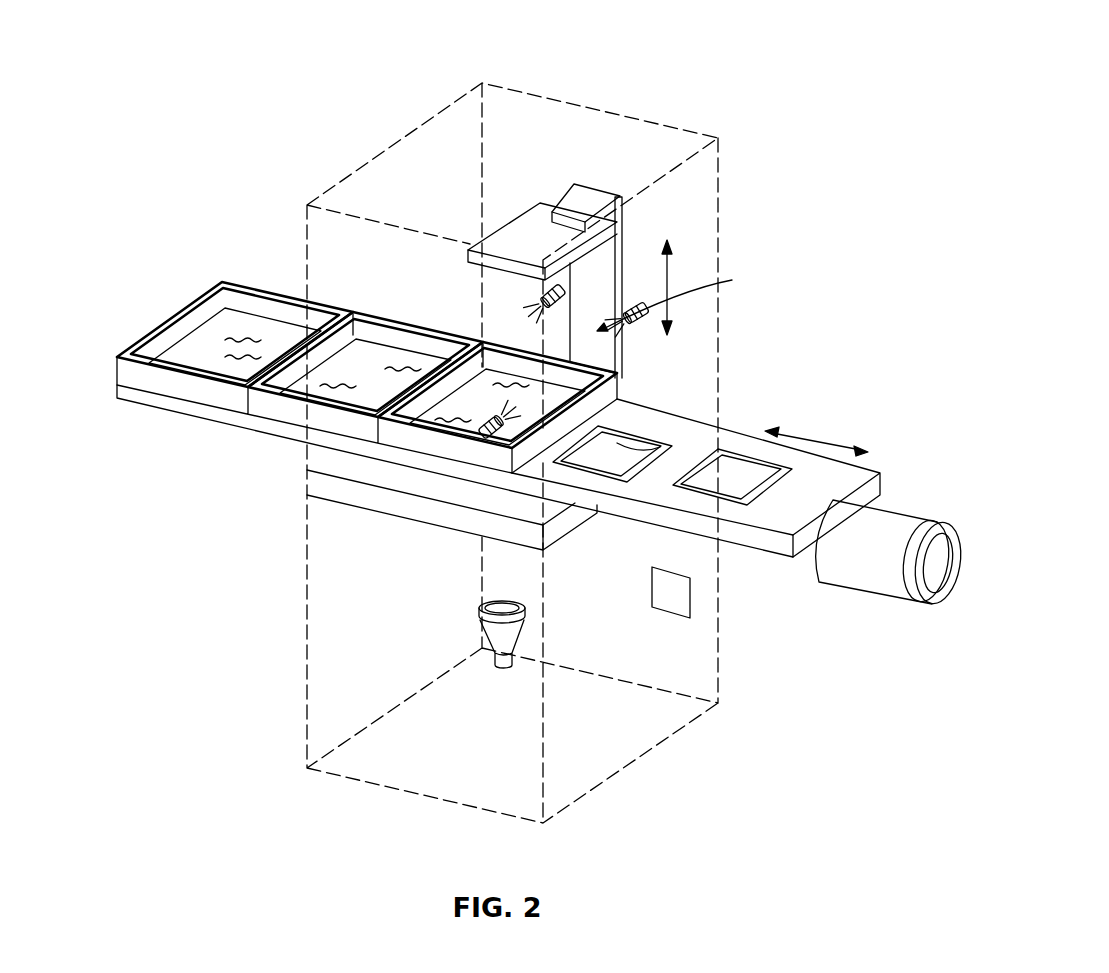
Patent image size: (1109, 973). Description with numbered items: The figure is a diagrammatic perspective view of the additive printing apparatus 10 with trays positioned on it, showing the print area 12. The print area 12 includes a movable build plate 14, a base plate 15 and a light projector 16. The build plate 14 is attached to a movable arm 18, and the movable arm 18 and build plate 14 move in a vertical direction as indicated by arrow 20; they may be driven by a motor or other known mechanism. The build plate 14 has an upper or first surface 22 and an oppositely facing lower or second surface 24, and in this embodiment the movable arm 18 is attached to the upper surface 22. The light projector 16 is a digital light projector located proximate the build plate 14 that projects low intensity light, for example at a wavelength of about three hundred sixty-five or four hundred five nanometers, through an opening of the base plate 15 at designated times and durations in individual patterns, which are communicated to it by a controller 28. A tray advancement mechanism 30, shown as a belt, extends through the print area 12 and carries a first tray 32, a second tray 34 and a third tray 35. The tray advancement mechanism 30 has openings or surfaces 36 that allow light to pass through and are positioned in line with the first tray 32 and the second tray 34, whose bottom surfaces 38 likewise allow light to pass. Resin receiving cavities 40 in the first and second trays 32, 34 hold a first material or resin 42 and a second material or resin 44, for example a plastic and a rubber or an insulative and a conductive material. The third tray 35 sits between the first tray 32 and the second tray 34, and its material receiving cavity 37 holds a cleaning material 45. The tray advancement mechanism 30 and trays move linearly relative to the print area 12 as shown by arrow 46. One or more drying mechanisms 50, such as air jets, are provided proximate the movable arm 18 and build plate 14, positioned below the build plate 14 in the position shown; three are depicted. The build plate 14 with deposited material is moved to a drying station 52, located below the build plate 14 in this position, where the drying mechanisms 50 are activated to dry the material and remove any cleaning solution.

The printing apparatus 10 is at (760, 98).
The print area 12 is at (637, 347).
The build plate 14 is at (535, 222).
The base plate 15 is at (433, 517).
The light projector 16 is at (483, 637).
The movable arm 18 is at (625, 215).
The arrow 20 is at (670, 283).
The upper or first surface 22 is at (506, 233).
The lower or second surface 24 is at (505, 332).
The controller 28 is at (670, 595).
The tray advancement mechanism 30 is at (867, 470).
The first tray 32 is at (417, 442).
The second tray 34 is at (183, 383).
The third tray 35 is at (280, 410).
The openings or surfaces 36 is at (682, 430).
The material receiving cavity 37 is at (372, 330).
The bottom surfaces 38 is at (222, 340).
The resin receiving cavities 40 is at (117, 356).
The first material or resin 42 is at (513, 318).
The second material or resin 44 is at (187, 315).
The cleaning material 45 is at (262, 372).
The arrow 46 is at (813, 440).
The drying mechanisms 50 is at (508, 318).
The drying station 52 is at (677, 292).